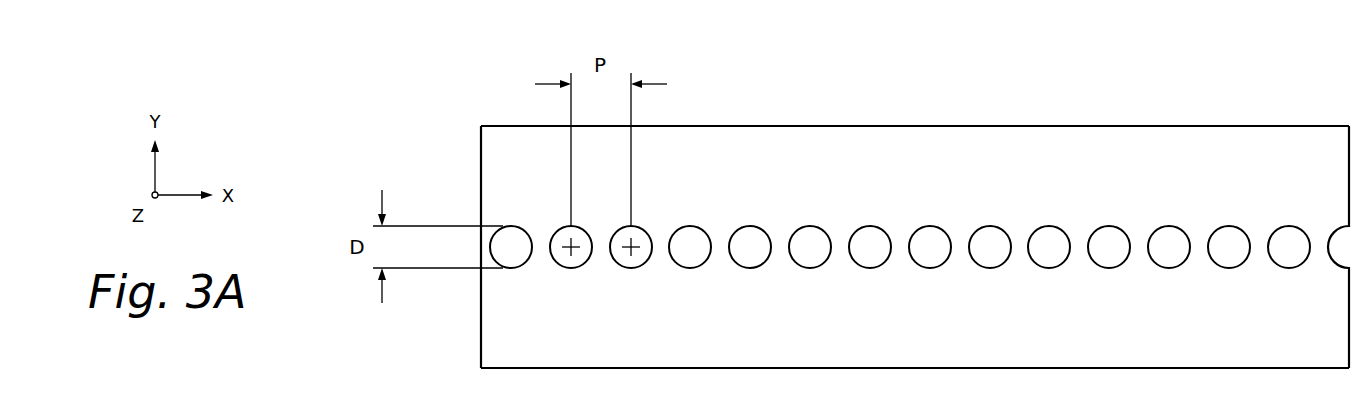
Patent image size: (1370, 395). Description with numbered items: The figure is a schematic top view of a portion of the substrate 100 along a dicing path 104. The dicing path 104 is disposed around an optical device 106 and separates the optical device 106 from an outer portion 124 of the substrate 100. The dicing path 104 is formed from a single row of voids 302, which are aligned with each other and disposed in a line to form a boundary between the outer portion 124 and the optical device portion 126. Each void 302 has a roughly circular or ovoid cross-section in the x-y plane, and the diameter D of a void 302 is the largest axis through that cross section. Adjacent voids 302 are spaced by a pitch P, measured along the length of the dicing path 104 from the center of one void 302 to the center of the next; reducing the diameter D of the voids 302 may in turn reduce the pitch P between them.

The substrate 100 is at (1289, 118).
The dicing path 104 is at (806, 195).
The optical device 106 is at (490, 352).
The outer portion 124 is at (985, 137).
The optical device portion 126 is at (906, 337).
The void 302 is at (514, 268).